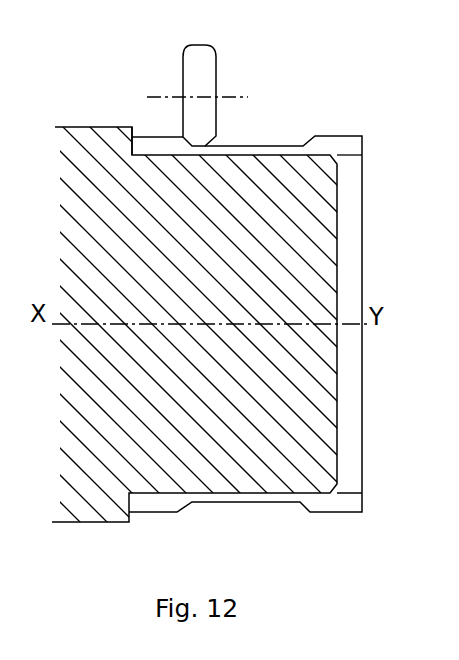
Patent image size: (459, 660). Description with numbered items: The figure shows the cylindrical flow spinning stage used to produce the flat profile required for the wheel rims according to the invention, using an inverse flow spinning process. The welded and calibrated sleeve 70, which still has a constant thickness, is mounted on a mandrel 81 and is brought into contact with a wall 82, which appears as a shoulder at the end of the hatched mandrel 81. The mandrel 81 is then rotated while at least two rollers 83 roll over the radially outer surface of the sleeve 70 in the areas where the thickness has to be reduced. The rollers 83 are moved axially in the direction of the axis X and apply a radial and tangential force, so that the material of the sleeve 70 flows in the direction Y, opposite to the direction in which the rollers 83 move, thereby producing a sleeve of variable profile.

The sleeve 70 is at (327, 145).
The mandrel 81 is at (298, 215).
The wall 82 is at (132, 147).
The rollers 83 is at (200, 78).